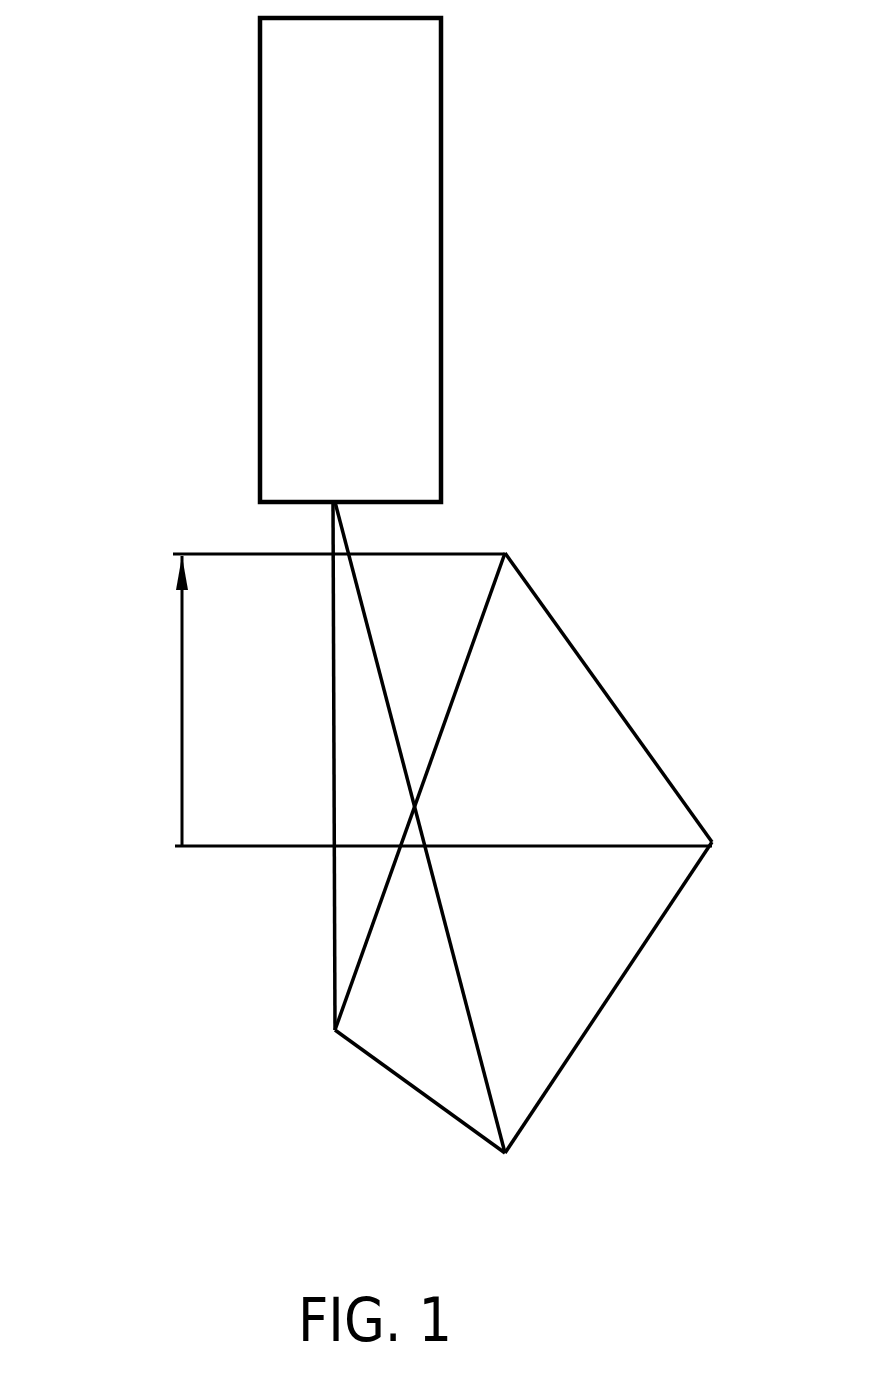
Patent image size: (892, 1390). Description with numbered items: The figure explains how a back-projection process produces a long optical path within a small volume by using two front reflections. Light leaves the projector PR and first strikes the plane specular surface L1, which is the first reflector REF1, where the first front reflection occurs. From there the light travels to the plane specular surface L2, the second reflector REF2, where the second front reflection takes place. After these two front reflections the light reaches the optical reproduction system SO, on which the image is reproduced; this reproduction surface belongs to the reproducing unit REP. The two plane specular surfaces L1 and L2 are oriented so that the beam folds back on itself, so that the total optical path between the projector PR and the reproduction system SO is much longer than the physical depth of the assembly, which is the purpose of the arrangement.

The projector PR is at (350, 260).
The optical reproduction system SO is at (442, 700).
The reproducing unit REP is at (182, 672).
The plane specular surface L1L1 L1 is at (419, 1120).
The plane specular surface L2L2 L2 is at (629, 688).
The reflector 1 REF1 is at (397, 1081).
The reflector 2 REF2 is at (613, 700).